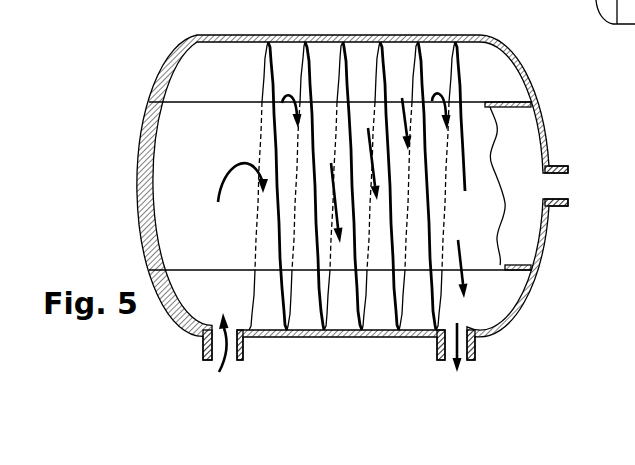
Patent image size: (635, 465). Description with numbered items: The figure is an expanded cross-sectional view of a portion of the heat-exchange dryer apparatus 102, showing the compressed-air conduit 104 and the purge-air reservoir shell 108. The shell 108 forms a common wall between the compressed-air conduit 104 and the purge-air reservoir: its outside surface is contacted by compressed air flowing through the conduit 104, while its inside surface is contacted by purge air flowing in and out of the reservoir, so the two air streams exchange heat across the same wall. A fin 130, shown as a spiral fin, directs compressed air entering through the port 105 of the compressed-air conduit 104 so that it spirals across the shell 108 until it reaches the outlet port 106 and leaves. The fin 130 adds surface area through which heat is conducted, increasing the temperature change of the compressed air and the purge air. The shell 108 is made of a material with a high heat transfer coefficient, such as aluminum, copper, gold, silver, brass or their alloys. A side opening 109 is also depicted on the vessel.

The heat-exchange dryer apparatus 102 is at (130, 93).
The compressed-air conduit 104 is at (238, 73).
The port 105 is at (217, 357).
The outlet port 106 is at (450, 357).
The purge-air reservoir shell 108 is at (503, 103).
The side port 109 is at (565, 188).
The fin 130 is at (462, 75).